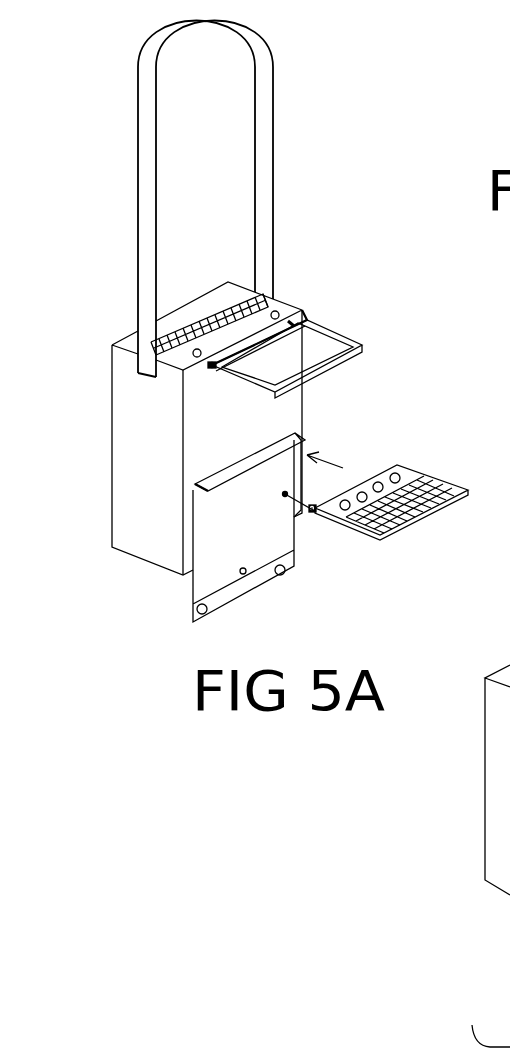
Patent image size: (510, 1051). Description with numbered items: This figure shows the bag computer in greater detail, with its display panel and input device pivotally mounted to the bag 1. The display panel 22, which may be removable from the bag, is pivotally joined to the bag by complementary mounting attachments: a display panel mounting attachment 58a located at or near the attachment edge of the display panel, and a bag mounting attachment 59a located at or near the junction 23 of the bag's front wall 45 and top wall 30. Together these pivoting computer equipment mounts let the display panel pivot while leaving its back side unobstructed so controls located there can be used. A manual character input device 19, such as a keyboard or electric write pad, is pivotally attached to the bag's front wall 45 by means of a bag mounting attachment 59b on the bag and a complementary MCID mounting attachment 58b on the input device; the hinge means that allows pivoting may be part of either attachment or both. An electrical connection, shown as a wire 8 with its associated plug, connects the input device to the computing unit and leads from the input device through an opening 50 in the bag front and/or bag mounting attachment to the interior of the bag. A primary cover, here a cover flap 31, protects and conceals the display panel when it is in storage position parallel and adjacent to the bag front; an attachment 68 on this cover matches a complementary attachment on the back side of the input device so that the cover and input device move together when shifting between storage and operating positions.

The bag 1 is at (125, 333).
The top wall 30 is at (200, 307).
The junction 23 is at (296, 312).
The display panel 22 is at (330, 333).
The bag mounting attachment 59a is at (212, 365).
The display panel mounting attachment 58a is at (212, 365).
The front wall 45 is at (197, 470).
The bag mounting attachment 59b is at (197, 492).
The cover flap 31 is at (190, 592).
The opening 50 is at (210, 488).
The attachment 68 is at (245, 574).
The wire 8 is at (313, 508).
The MCID mounting attachment 58b is at (313, 510).
The manual character input device 19 is at (443, 478).